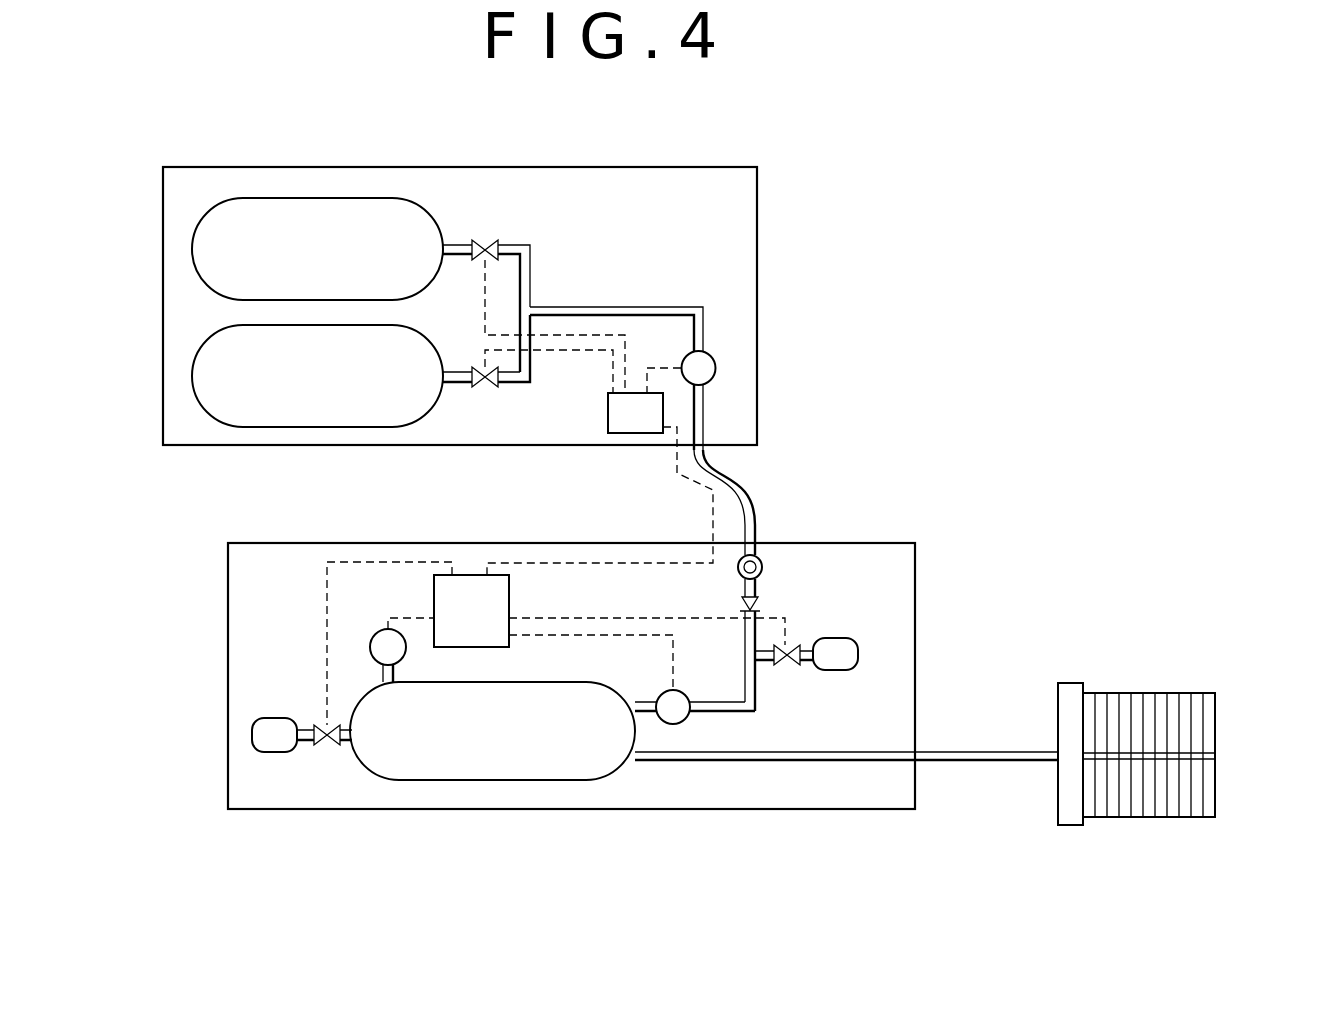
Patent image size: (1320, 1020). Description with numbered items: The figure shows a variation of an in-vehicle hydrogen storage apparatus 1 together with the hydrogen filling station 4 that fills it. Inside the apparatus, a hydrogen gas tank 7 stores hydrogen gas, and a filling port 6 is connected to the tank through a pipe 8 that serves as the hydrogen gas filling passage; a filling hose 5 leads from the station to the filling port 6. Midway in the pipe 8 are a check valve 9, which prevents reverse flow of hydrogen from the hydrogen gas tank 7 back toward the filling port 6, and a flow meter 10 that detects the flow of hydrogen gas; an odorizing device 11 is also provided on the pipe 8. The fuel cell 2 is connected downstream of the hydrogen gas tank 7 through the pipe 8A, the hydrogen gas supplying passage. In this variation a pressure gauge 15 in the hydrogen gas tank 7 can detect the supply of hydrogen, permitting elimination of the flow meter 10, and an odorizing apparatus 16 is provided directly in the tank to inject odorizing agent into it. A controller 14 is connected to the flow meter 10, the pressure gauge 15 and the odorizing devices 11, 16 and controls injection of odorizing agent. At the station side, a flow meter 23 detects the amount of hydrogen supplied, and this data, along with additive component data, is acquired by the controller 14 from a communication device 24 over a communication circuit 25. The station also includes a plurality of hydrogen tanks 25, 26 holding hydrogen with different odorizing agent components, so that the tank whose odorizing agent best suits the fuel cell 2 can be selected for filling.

The in-vehicle hydrogen storage apparatus 1 is at (915, 685).
The fuel cell 2 is at (1215, 693).
The hydrogen filling station 4 is at (768, 136).
The filling hose 5 is at (742, 490).
The filling port 6 is at (761, 560).
The hydrogen gas tank 7 is at (610, 780).
The pipe 8 is at (752, 714).
The pipe 8A is at (778, 760).
The check valve 9 is at (760, 601).
The flow meter 10 is at (665, 693).
The odorizing device 11 is at (835, 689).
The controller 14 is at (434, 600).
The pressure gauge 15 is at (375, 634).
The odorizing apparatus 16 is at (310, 779).
The flow meter 23 is at (707, 356).
The communication device 24 is at (608, 408).
The hydrogen tank / communication circuit 25 is at (440, 233).
The hydrogen tank 26 is at (433, 342).